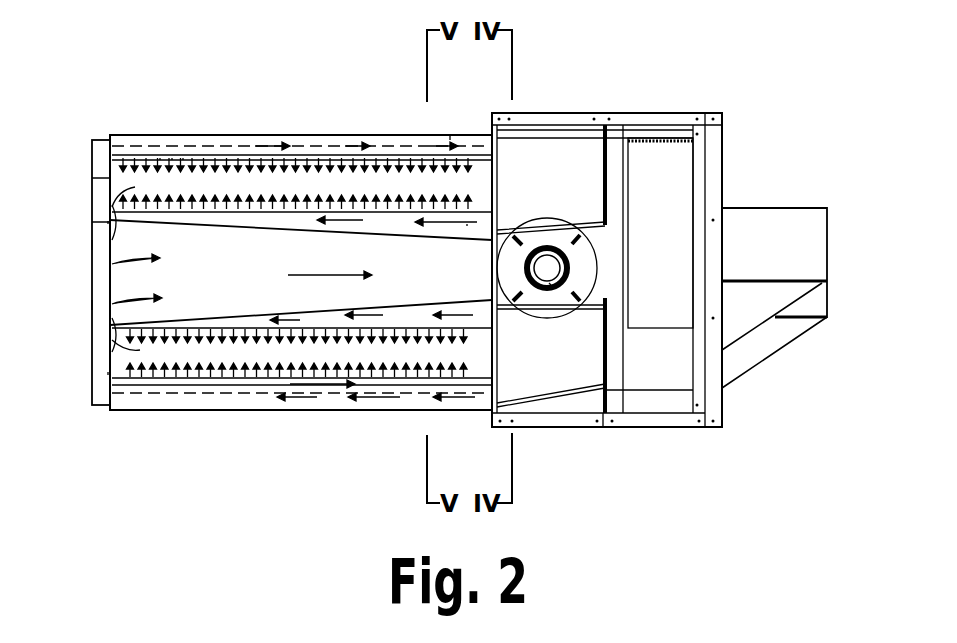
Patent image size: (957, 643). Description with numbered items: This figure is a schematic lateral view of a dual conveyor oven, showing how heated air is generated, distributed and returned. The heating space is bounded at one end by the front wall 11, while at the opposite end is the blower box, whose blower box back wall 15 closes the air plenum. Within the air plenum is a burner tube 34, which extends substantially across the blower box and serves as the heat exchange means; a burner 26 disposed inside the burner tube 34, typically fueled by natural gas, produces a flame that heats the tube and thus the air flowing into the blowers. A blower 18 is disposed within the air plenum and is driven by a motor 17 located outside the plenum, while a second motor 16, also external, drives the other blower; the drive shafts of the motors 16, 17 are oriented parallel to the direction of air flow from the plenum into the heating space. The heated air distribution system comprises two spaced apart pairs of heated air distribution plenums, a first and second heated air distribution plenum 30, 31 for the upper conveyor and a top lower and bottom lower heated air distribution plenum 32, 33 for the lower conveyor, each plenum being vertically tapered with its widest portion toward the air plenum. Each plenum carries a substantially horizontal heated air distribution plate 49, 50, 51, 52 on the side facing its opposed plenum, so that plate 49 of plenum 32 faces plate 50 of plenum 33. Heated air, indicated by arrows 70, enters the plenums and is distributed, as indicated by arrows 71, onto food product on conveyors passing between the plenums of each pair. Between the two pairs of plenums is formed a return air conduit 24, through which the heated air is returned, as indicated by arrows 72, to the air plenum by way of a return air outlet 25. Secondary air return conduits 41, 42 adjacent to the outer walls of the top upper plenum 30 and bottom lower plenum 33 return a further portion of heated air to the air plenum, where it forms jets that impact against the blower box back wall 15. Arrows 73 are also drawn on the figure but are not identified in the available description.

The front wall 11 is at (92, 170).
The blower box back wall 15 is at (723, 125).
The motor 16 is at (830, 293).
The motor 17 is at (783, 208).
The blower 18 is at (673, 213).
The return air conduit 24 is at (246, 282).
The return air outlet 25 is at (497, 280).
The burner 26 is at (549, 283).
The first heated air distribution plenum 30 is at (328, 143).
The second heated air distribution plenum 31 is at (380, 222).
The heated air distribution plenum 32 is at (308, 335).
The heated air distribution plenum 33 is at (318, 397).
The burner tube 34 is at (543, 220).
The secondary air return conduit 41 is at (231, 155).
The secondary air return conduit 42 is at (228, 397).
The heated air distribution plate 49 is at (112, 340).
The heated air distribution plate 50 is at (110, 372).
The heated air distribution plate 51 is at (110, 221).
The heated air distribution plate 52 is at (110, 178).
The arrows indicating heated air 70 is at (450, 136).
The arrows indicating distributed heated air 71 is at (183, 160).
The arrows indicating return air 72 is at (110, 306).
The air flow 73 is at (308, 147).